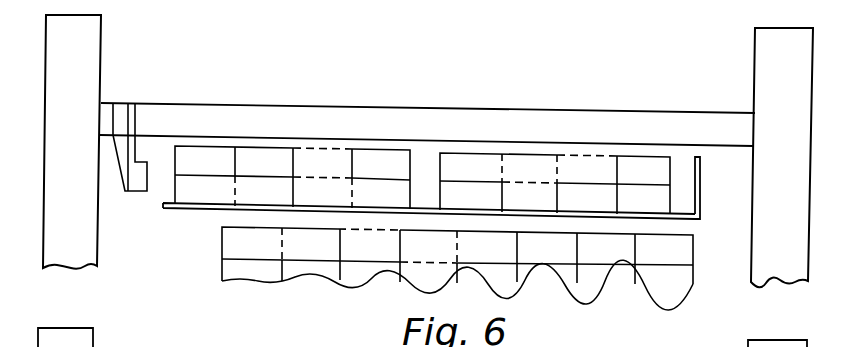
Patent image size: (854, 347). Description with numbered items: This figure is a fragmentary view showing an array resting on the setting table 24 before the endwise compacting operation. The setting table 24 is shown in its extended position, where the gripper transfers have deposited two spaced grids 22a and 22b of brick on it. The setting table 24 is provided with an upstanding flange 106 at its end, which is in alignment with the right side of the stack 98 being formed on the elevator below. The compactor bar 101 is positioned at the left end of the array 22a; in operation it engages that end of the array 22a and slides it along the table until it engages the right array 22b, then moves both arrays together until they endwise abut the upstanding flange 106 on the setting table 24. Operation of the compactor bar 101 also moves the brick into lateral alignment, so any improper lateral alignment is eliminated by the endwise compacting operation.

The grid 22a is at (327, 148).
The grid 22b is at (525, 153).
The setting table 24 is at (682, 219).
The stack 98 is at (693, 263).
The compactor bar 101 is at (138, 192).
The upstanding flange 106 is at (709, 168).